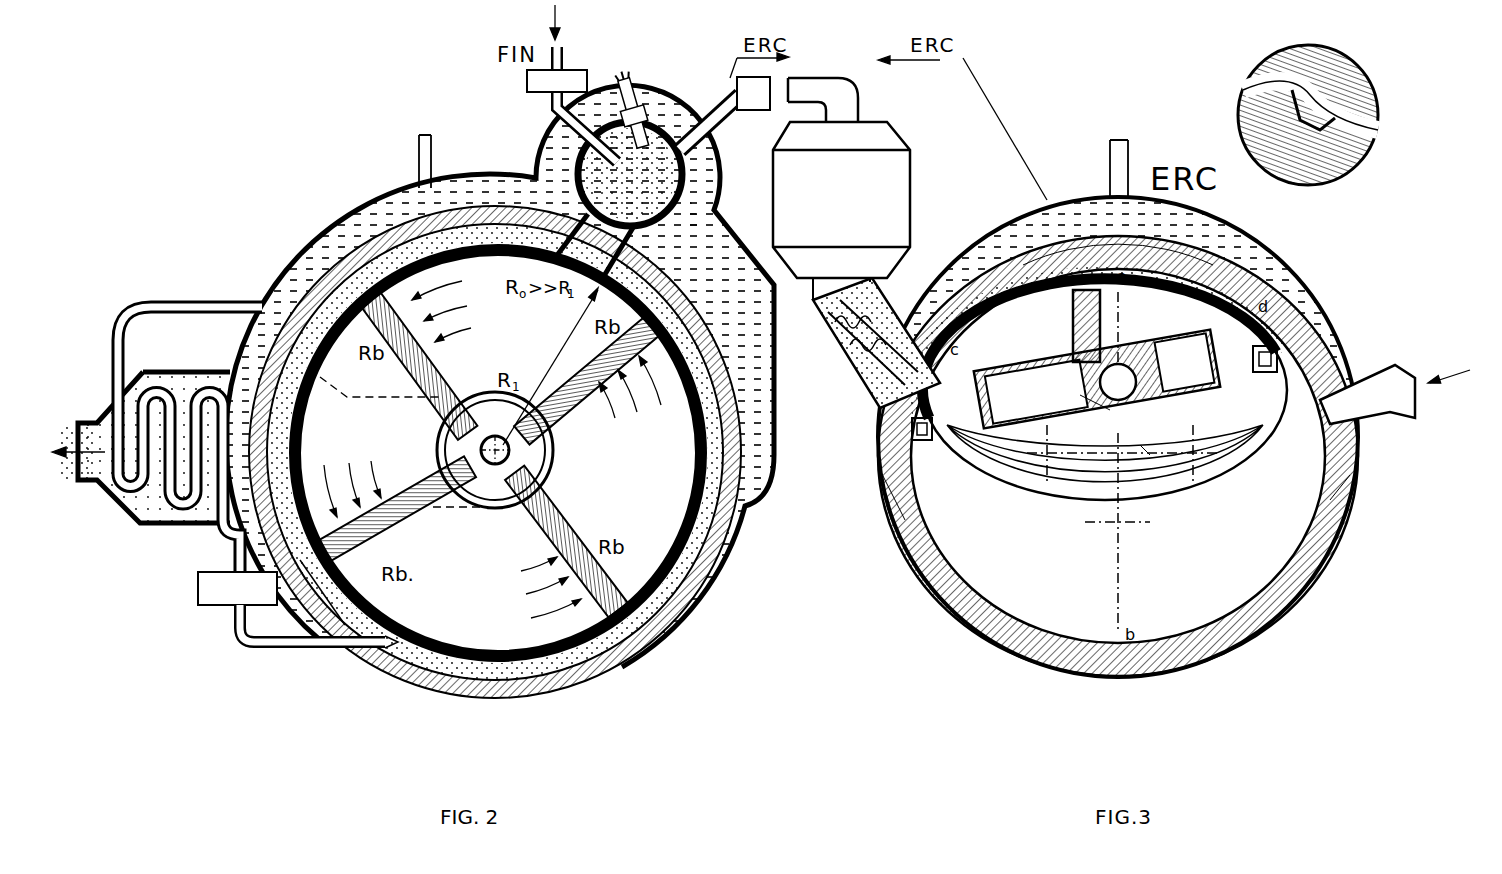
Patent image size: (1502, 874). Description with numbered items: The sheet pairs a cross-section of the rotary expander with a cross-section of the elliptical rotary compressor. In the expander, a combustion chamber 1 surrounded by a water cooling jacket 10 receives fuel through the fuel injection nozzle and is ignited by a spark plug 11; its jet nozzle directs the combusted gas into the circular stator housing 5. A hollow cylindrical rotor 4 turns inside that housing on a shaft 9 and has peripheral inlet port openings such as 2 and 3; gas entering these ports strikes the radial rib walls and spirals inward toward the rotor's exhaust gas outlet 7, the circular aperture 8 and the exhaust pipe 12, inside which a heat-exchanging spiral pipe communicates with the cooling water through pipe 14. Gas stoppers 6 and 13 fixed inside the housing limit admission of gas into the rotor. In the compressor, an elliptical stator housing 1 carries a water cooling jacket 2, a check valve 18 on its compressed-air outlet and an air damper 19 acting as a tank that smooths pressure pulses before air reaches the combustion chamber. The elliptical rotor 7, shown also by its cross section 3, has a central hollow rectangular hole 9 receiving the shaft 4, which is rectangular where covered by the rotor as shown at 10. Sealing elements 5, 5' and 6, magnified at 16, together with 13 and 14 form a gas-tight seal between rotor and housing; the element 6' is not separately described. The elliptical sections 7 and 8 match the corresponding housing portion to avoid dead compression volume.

In FIG. 2, the combustion chamber / elliptical stator housing 1 is at (625, 180).
In FIG. 3, the combustion chamber / elliptical stator housing 1 is at (1325, 372).
In FIG. 2, the inlet port opening / water cooling jacket 2 is at (478, 252).
In FIG. 3, the inlet port opening / water cooling jacket 2 is at (1312, 290).
In FIG. 2, the inlet port opening / elliptical rotor cross section 3 is at (293, 467).
In FIG. 3, the inlet port opening / elliptical rotor cross section 3 is at (1240, 330).
In FIG. 2, the hollow cylindrical rotor / compressor shaft 4 is at (268, 562).
In FIG. 3, the hollow cylindrical rotor / compressor shaft 4 is at (1090, 295).
In FIG. 2, the circular stator housing / sealing element 5 is at (279, 635).
In FIG. 3, the circular stator housing / sealing element 5 is at (876, 517).
In FIG. 3, the sealing element 5' is at (879, 426).
In FIG. 2, the gas stopper / sealing element 6 is at (280, 649).
In FIG. 3, the gas stopper / sealing element 6 is at (1320, 246).
In FIG. 3, the seal 6' is at (1373, 517).
In FIG. 2, the rotor exhaust gas outlet / elliptical rotor 7 is at (480, 500).
In FIG. 3, the rotor exhaust gas outlet / elliptical rotor 7 is at (1027, 493).
In FIG. 2, the circular aperture exhaust outlet / elliptical rotor section 8 is at (497, 505).
In FIG. 3, the circular aperture exhaust outlet / elliptical rotor section 8 is at (1017, 403).
In FIG. 2, the shaft / central hollow rectangular hole 9 is at (520, 457).
In FIG. 3, the shaft / central hollow rectangular hole 9 is at (965, 330).
In FIG. 2, the water cooling jacket / rectangular shaft portion 10 is at (756, 437).
In FIG. 3, the water cooling jacket / rectangular shaft portion 10 is at (1090, 400).
In FIG. 2, the spark plug 11 is at (637, 90).
In FIG. 2, the exhaust pipe 12 is at (167, 370).
In FIG. 2, the gas stopper / sealing element 13 is at (655, 242).
In FIG. 3, the gas stopper / sealing element 13 is at (1165, 455).
In FIG. 2, the pipe / sealing element 14 is at (228, 298).
In FIG. 3, the pipe / sealing element 14 is at (1143, 447).
In FIG. 3, the magnified sealing element view 16 is at (1308, 115).
In FIG. 3, the check valve 18 is at (873, 343).
In FIG. 3, the air damper 19 is at (841, 178).